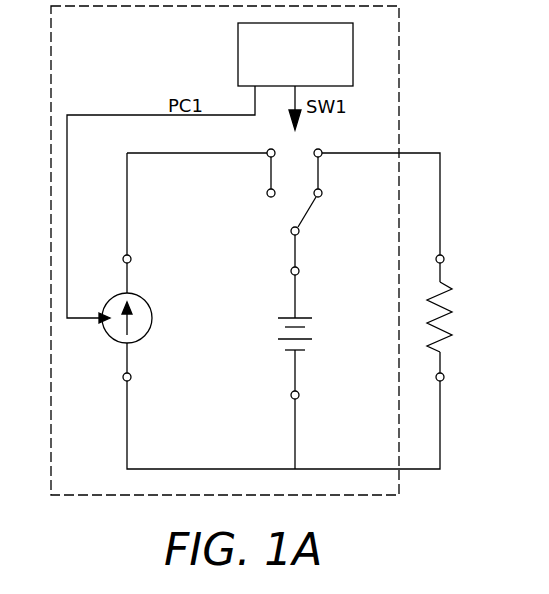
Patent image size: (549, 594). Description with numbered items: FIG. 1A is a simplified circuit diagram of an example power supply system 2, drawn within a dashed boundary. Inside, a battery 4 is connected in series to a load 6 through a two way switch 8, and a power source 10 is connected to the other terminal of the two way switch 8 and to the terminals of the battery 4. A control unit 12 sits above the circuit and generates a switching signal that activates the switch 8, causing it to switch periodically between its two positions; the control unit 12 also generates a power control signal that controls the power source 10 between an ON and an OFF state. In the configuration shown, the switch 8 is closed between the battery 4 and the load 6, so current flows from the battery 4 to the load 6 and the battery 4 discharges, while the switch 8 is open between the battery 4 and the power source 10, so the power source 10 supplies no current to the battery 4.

The power supply system 2 is at (50, 152).
The battery 4 is at (304, 318).
The load 6 is at (452, 310).
The two way switch 8 is at (282, 211).
The power source 10 is at (152, 318).
The control unit 12 is at (238, 53).